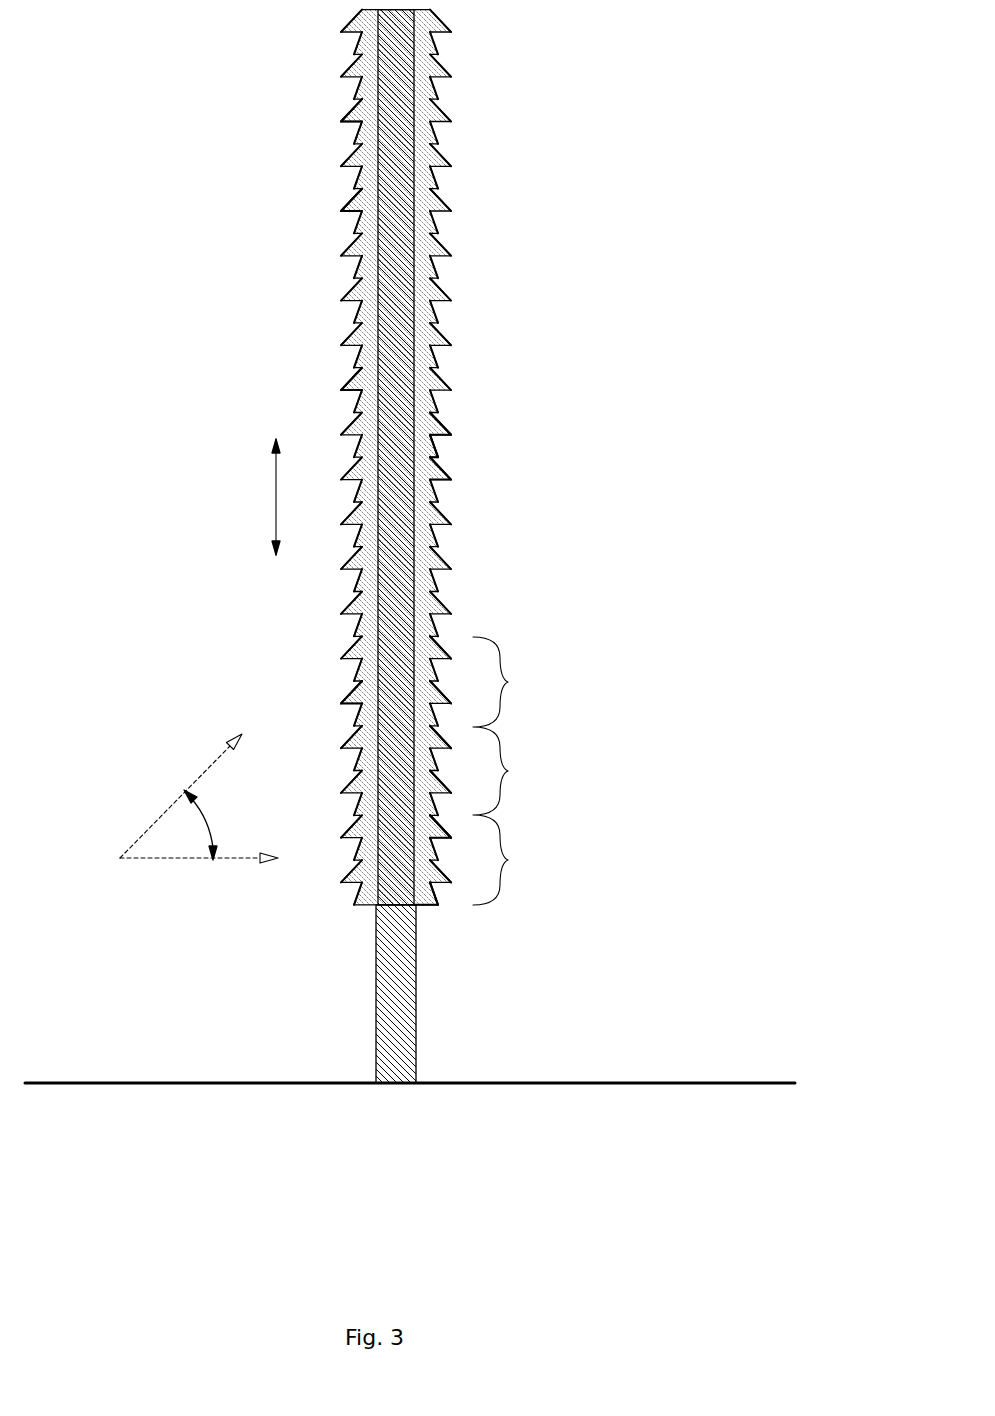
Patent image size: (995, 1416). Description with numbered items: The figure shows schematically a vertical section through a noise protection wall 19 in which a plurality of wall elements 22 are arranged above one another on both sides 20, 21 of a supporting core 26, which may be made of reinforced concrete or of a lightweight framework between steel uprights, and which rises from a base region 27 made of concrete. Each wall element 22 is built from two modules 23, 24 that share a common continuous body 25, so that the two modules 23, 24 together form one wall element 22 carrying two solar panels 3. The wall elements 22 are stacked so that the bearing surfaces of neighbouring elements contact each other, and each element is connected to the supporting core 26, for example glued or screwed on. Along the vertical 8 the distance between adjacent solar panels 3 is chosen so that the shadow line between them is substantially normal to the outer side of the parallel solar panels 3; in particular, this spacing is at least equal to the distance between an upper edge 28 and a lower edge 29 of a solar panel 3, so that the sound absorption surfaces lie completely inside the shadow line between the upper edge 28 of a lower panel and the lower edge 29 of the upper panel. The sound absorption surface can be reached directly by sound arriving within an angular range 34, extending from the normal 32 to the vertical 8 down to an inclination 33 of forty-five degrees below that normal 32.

The solar panel 3 is at (445, 157).
The vertical 8 is at (269, 497).
The noise protection wall 19 is at (400, 118).
The first side 20 is at (389, 213).
The second side 21 is at (413, 213).
The wall element 22 is at (508, 860).
The first module 23 is at (447, 832).
The second module 24 is at (435, 885).
The common continuous body 25 is at (368, 695).
The supporting core 26 is at (390, 383).
The base region 27 is at (384, 982).
The upper edge 28 is at (431, 458).
The lower edge 29 is at (450, 478).
The normal 32 is at (199, 872).
The inclination 33 is at (181, 796).
The angular range 34 is at (198, 825).